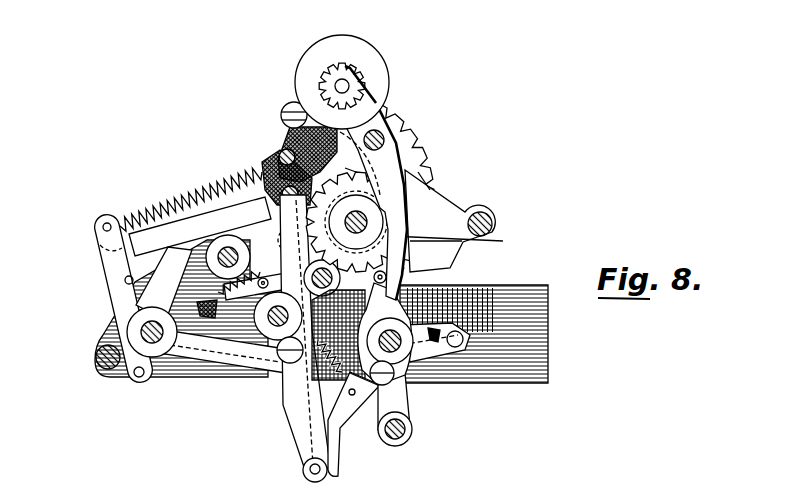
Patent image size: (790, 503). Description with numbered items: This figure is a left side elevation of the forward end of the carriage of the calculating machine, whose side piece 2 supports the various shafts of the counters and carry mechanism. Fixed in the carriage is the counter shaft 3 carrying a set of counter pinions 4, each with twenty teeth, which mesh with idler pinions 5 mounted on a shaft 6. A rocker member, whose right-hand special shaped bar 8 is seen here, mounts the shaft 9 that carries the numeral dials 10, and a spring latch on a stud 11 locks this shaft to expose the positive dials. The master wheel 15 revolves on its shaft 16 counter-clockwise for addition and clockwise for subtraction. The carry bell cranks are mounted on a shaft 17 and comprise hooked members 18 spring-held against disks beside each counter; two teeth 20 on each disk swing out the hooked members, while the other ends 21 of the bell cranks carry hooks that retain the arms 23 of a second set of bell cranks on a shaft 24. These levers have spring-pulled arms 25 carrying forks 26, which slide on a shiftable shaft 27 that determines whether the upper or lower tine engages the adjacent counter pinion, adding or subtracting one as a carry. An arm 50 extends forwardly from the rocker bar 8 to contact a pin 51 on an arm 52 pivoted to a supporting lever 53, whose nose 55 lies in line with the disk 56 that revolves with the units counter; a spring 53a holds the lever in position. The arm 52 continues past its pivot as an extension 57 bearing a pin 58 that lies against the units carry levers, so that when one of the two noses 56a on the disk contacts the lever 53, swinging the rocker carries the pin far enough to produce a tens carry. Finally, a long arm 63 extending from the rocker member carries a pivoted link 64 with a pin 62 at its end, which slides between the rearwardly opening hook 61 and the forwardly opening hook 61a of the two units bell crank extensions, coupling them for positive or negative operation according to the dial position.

The side piece 2 is at (552, 342).
The counter shaft 3 is at (340, 225).
The counter pinion 4 is at (293, 140).
The idler pinion 5 is at (405, 127).
The idler pinion shaft 6 is at (380, 132).
The special shaped rocker bar 8 is at (345, 168).
The dial shaft 9 is at (344, 84).
The numeral dial 10 is at (342, 82).
The stud 11 is at (290, 102).
The master wheel 15 is at (436, 226).
The master wheel shaft 16 is at (492, 220).
The carry bell crank shaft 17 is at (380, 390).
The hooked member 18 is at (344, 333).
The disk tooth 20 is at (367, 237).
The bell crank end 21 is at (337, 410).
The bell crank arm 23 is at (228, 351).
The bell crank shaft 24 is at (141, 335).
The lever arm 25 is at (107, 243).
The fork 26 is at (200, 227).
The shiftable shaft 27 is at (278, 230).
The rocker arm 50 is at (356, 222).
The pin 51 is at (280, 156).
The arm 52 is at (287, 213).
The supporting lever 53 is at (355, 285).
The spring 53a is at (260, 167).
The nose 55 is at (247, 172).
The disk 56 is at (451, 241).
The disk nose 56a is at (418, 172).
The arm extension 57 is at (297, 335).
The pin 58 is at (303, 472).
The hook 61 is at (433, 345).
The hook 61a is at (430, 345).
The pin 62 is at (457, 347).
The long arm 63 is at (385, 328).
The pivoted link 64 is at (413, 372).